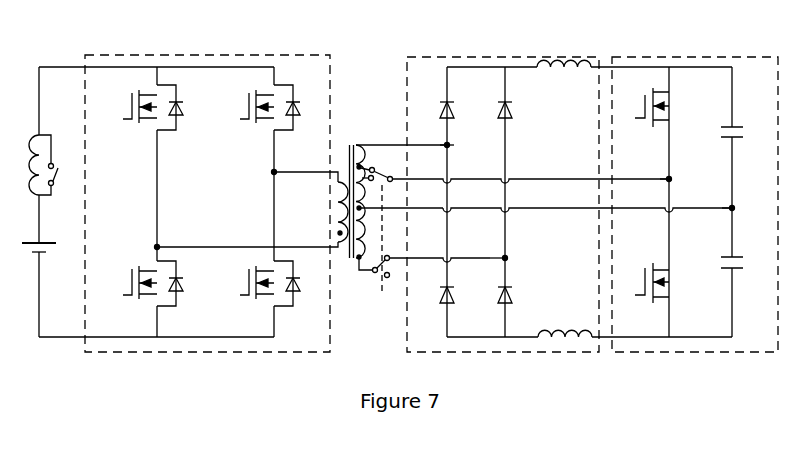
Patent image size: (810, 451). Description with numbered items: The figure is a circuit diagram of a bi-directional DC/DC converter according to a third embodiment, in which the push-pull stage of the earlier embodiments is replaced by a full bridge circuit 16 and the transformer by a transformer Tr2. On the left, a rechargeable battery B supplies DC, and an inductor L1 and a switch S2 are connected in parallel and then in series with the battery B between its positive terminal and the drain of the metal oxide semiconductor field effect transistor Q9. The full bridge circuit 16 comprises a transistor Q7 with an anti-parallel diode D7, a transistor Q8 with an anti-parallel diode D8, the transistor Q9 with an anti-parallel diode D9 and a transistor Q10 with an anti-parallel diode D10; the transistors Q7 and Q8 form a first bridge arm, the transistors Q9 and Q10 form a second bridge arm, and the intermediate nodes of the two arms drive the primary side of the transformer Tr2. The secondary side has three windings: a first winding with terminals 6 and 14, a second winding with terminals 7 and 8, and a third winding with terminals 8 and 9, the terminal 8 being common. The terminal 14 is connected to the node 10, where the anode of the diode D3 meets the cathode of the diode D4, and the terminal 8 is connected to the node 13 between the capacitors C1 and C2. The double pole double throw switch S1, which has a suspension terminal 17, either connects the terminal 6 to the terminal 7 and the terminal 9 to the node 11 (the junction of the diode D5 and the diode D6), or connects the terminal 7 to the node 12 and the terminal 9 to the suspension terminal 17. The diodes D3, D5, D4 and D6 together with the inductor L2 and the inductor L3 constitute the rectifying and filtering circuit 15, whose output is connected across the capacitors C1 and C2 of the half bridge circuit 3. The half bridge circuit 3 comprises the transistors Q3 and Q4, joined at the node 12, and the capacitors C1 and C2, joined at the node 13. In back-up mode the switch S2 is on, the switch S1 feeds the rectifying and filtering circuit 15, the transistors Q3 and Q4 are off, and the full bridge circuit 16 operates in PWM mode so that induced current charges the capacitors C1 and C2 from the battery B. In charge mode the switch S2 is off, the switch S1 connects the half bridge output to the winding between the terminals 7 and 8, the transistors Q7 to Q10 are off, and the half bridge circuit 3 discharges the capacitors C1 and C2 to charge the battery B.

The full bridge circuit 16 is at (213, 55).
The rectifying and filtering circuit 15 is at (466, 57).
The half bridge circuit 3 is at (696, 57).
The terminal 14 is at (401, 143).
The terminal 6 is at (370, 163).
The terminal 7 is at (372, 188).
The terminal 8 is at (400, 212).
The terminal 9 is at (367, 258).
The suspension terminal 17 is at (386, 287).
The node 10 is at (460, 147).
The node 11 is at (496, 249).
The node 12 is at (677, 182).
The node 13 is at (738, 210).
The inductor L1 is at (22, 165).
The switch S2 is at (56, 165).
The rechargeable battery B is at (35, 256).
The metal oxide semiconductor field effect transistor Q9 is at (132, 106).
The anti-parallel diode D9 is at (178, 112).
The metal oxide semiconductor field effect transistor Q7 is at (249, 106).
The anti-parallel diode D7 is at (297, 111).
The metal oxide semiconductor field effect transistor Q10 is at (125, 282).
The anti-parallel diode D10 is at (183, 289).
The metal oxide semiconductor field effect transistor Q8 is at (249, 282).
The anti-parallel diode D8 is at (295, 289).
The transformer Tr2 is at (351, 213).
The switch S1 is at (389, 234).
The inductor L2 is at (564, 77).
The inductor L3 is at (565, 324).
The diode D3 is at (433, 114).
The diode D5 is at (492, 114).
The diode D4 is at (436, 307).
The diode D6 is at (494, 307).
The metal oxide semiconductor field effect transistor Q3 is at (643, 107).
The metal oxide semiconductor field effect transistor Q4 is at (643, 283).
The capacitor C1 is at (745, 133).
The capacitor C2 is at (744, 265).